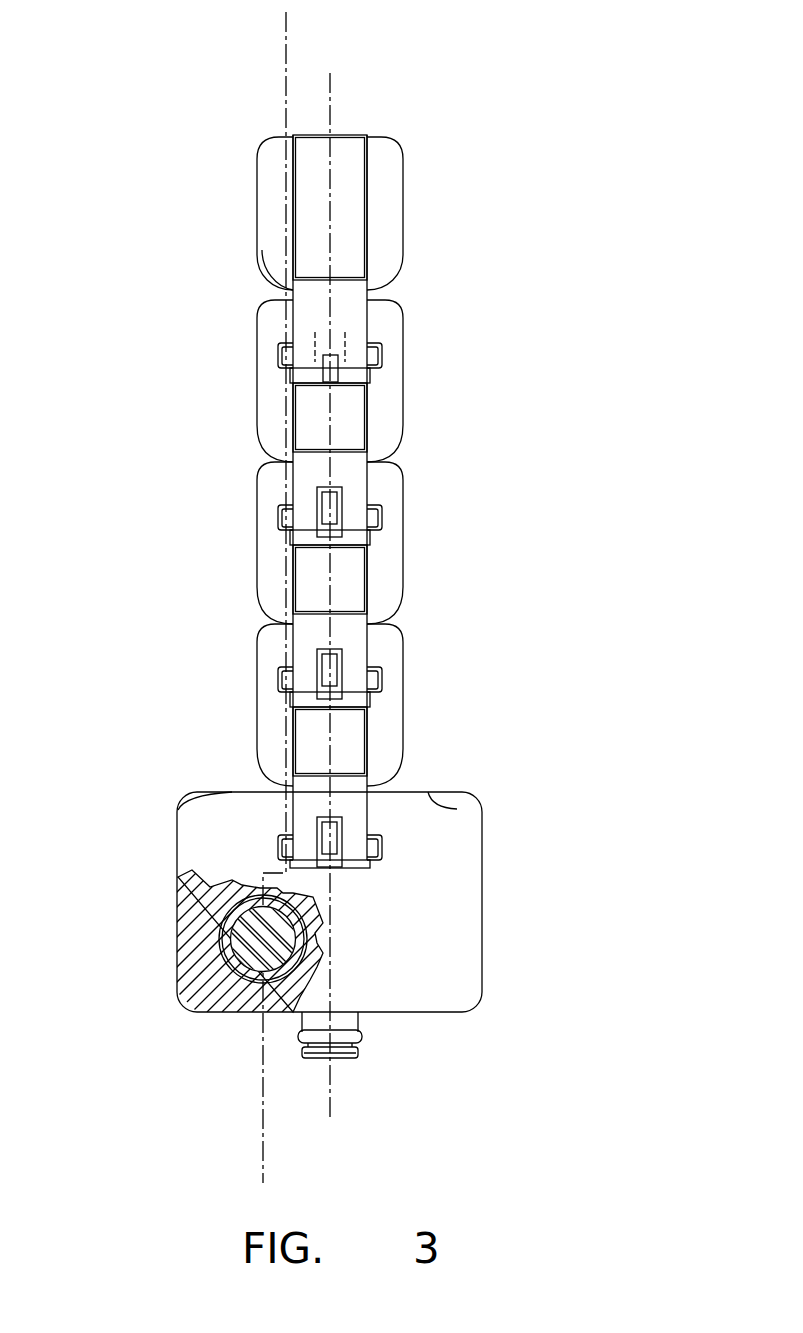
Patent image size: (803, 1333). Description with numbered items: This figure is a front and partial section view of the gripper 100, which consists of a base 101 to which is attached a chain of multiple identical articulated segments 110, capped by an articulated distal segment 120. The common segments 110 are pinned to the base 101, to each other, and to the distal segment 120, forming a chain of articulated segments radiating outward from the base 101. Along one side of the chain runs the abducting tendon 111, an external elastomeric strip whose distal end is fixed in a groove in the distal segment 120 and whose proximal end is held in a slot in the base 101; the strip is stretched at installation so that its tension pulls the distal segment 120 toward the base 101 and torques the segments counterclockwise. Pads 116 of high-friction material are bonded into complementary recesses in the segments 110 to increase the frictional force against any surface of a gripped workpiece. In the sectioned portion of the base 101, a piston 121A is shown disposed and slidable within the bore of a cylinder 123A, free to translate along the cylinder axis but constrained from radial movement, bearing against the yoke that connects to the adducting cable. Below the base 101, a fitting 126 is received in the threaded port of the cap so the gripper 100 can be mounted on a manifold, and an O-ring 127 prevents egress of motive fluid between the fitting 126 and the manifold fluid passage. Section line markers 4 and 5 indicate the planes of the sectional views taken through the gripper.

The gripper 100 is at (497, 469).
The base 101 is at (482, 902).
The articulated segments 110 is at (403, 362).
The abducting tendon 111 is at (344, 197).
The pads 116 is at (343, 417).
The distal segment 120 is at (403, 223).
The piston 121A is at (233, 952).
The cylinder 123A is at (217, 933).
The fitting 126 is at (355, 1055).
The O-ring 127 is at (360, 1035).
The section line 4- 4 is at (290, 1183).
The section line 5- 5 is at (357, 1118).